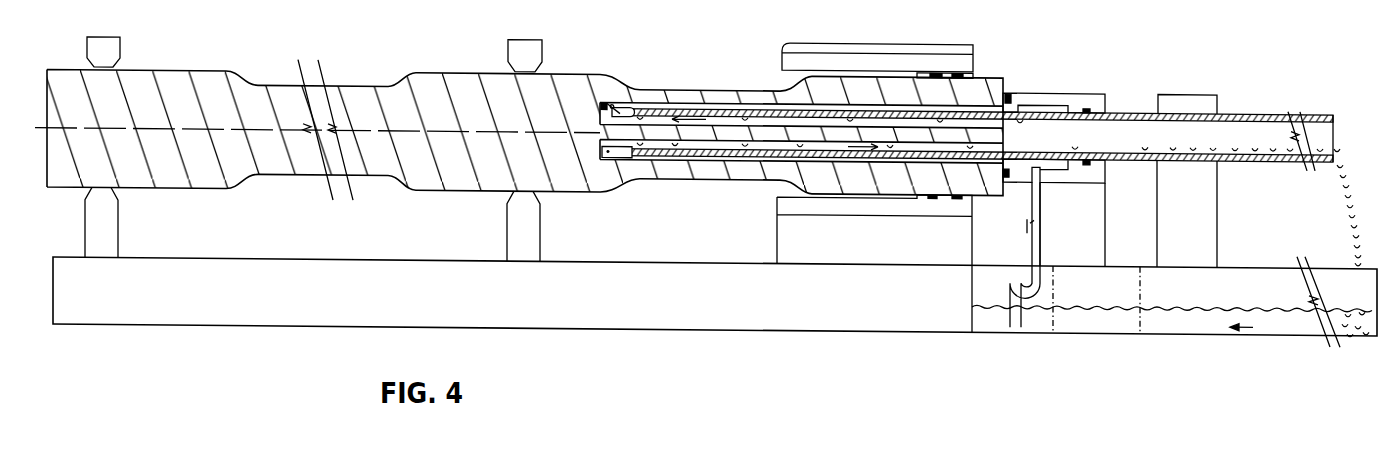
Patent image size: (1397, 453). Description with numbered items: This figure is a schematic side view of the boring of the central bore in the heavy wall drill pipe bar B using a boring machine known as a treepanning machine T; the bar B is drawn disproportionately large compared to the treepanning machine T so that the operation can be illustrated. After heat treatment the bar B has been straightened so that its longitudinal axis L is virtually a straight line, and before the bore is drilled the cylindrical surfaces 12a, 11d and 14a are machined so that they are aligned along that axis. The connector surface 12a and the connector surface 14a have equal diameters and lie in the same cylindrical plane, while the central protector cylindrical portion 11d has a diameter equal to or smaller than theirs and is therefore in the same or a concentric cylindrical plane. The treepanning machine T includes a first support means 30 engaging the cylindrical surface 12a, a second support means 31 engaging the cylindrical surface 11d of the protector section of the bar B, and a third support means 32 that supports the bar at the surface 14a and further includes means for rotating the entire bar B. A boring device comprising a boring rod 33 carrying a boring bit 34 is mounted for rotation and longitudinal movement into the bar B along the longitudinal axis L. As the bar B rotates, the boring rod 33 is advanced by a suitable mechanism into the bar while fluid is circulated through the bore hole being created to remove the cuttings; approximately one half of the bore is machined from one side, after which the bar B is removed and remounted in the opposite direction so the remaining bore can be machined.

The longitudinal axis L is at (137, 126).
The connector surface 12a is at (202, 69).
The heavy wall drill pipe bar B is at (397, 80).
The central protector cylindrical portion 11d is at (441, 69).
The boring bit 34 is at (602, 98).
The boring rod 33 is at (679, 103).
The third support means 32 is at (788, 36).
The connector surface 14a is at (1003, 84).
The first support means 30 is at (117, 237).
The second support means 31 is at (538, 232).
The treepanning machine T is at (616, 324).